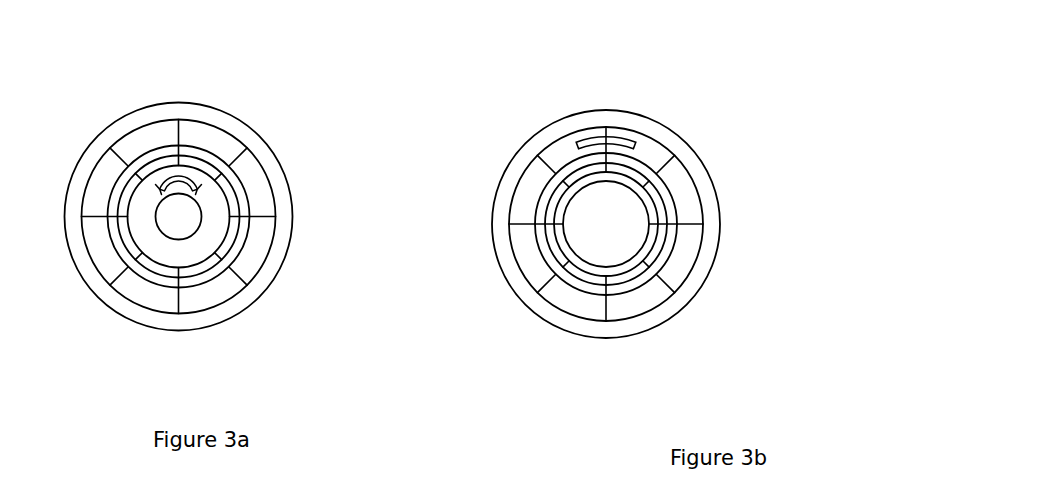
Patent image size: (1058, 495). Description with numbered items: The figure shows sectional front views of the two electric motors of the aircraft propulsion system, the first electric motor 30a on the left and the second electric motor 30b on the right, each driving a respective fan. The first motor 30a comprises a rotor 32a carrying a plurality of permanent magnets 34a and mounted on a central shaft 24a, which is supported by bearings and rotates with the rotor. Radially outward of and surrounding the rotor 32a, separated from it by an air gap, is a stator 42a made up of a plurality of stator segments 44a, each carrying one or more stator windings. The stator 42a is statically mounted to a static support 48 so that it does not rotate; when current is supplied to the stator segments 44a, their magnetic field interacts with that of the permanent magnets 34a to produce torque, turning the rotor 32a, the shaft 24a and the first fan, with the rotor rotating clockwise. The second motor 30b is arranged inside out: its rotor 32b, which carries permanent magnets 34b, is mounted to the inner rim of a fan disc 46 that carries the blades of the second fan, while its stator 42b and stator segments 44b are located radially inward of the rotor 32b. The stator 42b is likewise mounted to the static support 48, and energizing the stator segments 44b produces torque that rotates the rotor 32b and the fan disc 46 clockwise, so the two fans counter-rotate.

In FIG. 3A, the shaft 24a is at (285, 273).
In FIG. 3A, the first electric motor 30a is at (327, 255).
In FIG. 3B, the second electric motor 30b is at (786, 266).
In FIG. 3A, the rotor 32a is at (207, 286).
In FIG. 3B, the rotor 32b is at (679, 127).
In FIG. 3A, the permanent magnets 34a is at (273, 217).
In FIG. 3B, the permanent magnets 34b is at (707, 206).
In FIG. 3A, the stator 42a is at (200, 195).
In FIG. 3B, the stator 42b is at (628, 289).
In FIG. 3A, the stator segments 44a is at (281, 200).
In FIG. 3B, the stator segments 44b is at (686, 224).
In FIG. 3B, the fan disc 46 is at (591, 208).
In FIG. 3A, the static support 48 is at (162, 201).
In FIG. 3B, the static support 48 is at (697, 274).